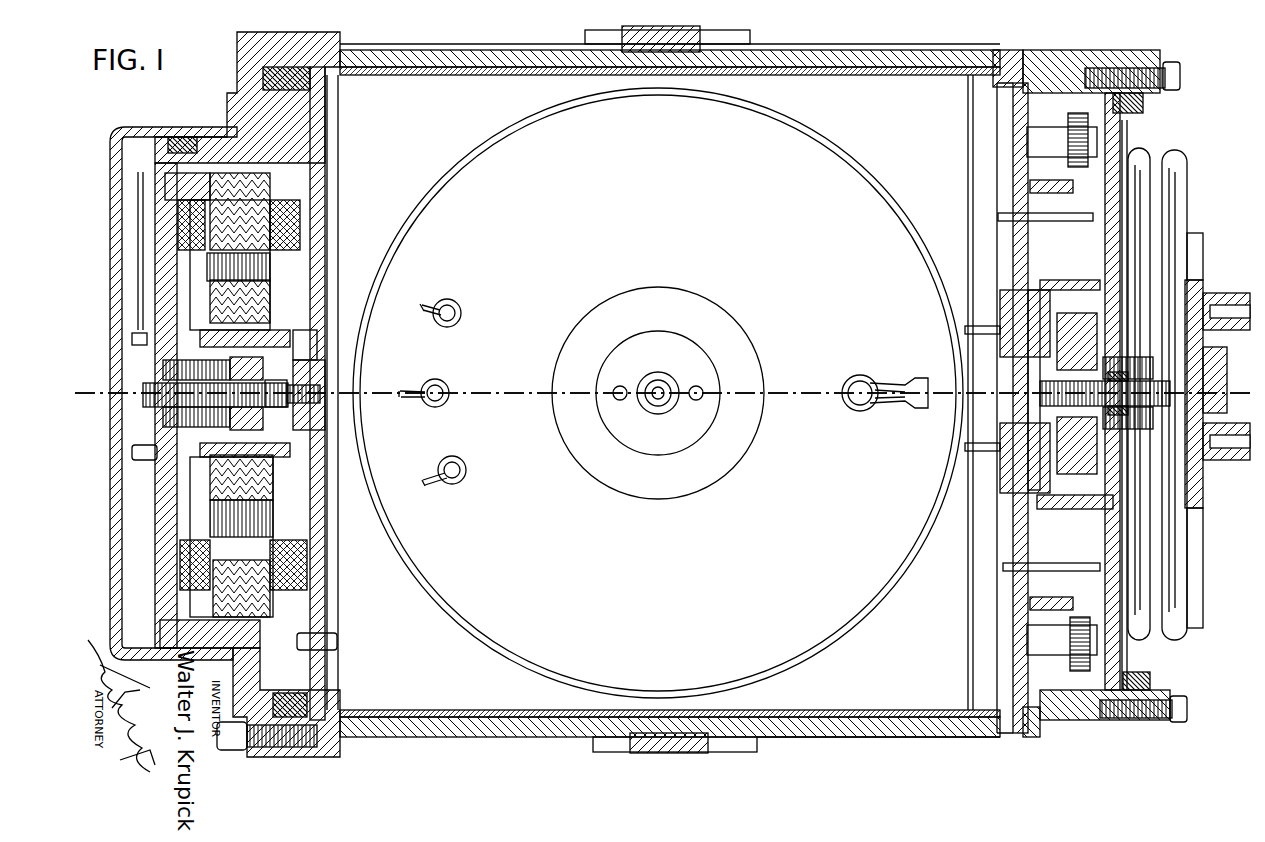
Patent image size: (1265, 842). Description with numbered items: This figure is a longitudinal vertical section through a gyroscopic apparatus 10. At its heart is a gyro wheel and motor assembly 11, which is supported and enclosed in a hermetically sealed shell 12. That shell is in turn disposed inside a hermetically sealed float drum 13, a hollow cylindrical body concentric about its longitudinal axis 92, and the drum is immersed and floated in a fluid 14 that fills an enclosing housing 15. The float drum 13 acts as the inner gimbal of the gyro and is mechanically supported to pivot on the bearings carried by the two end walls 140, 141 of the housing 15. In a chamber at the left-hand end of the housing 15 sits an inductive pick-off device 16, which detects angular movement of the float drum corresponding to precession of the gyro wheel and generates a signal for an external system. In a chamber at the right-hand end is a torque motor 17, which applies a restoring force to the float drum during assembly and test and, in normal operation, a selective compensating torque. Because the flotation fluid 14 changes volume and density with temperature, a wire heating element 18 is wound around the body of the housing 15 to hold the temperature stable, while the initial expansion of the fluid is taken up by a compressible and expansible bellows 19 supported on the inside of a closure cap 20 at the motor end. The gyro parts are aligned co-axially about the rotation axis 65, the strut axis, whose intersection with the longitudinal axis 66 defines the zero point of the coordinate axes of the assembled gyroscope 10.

The gyroscopic apparatus 10 is at (474, 38).
The gyro wheel and motor assembly 11 is at (484, 144).
The hermetically sealed shell 12 is at (460, 178).
The hermetically sealed float drum 13 is at (505, 76).
The fluid 14 is at (435, 718).
The enclosing housing 15 is at (488, 735).
The inductive pick-off device 16 is at (284, 612).
The torque motor 17 is at (1008, 482).
The wire heating element 18 is at (825, 735).
The bellows 19 is at (1185, 624).
The closure cap 20 is at (1160, 668).
The rotation axis 65 is at (660, 392).
The longitudinal axis 66 is at (800, 375).
The longitudinal axis 92 is at (78, 393).
The end wall 140 is at (248, 82).
The end wall 141 is at (1065, 70).